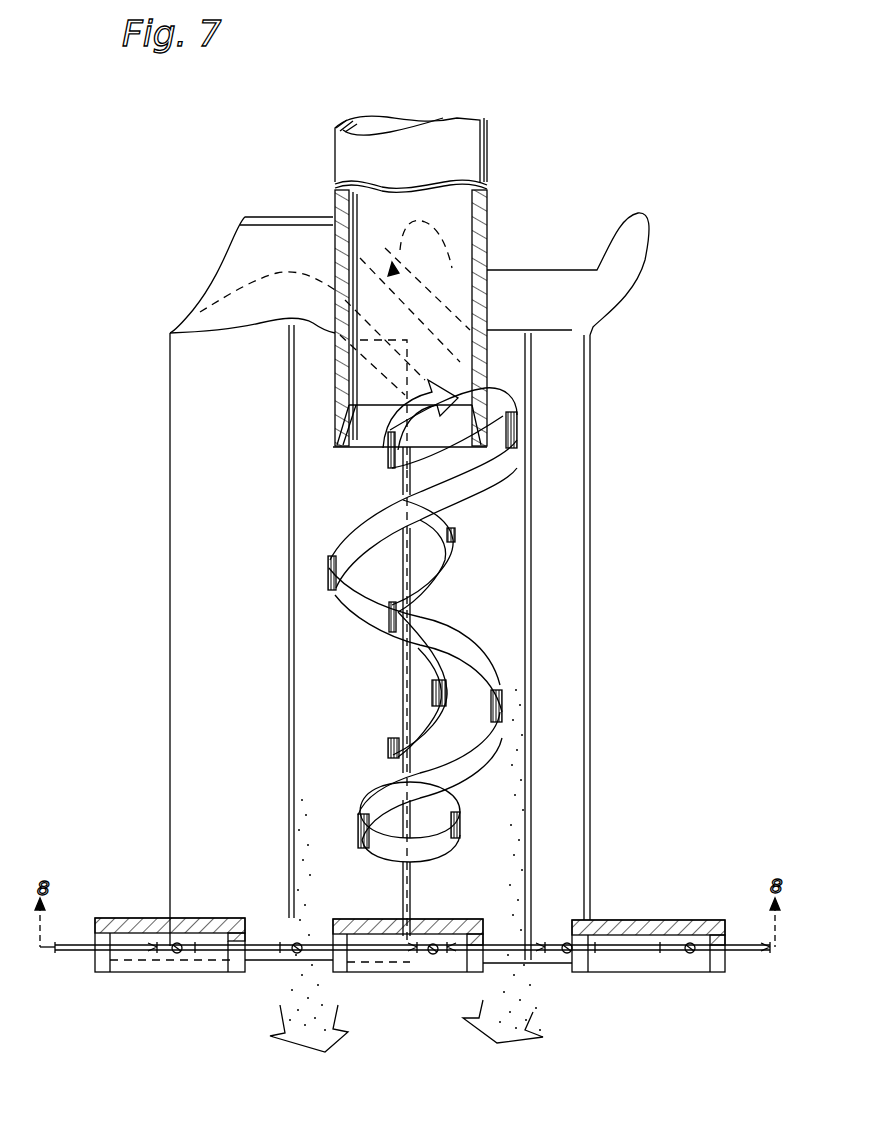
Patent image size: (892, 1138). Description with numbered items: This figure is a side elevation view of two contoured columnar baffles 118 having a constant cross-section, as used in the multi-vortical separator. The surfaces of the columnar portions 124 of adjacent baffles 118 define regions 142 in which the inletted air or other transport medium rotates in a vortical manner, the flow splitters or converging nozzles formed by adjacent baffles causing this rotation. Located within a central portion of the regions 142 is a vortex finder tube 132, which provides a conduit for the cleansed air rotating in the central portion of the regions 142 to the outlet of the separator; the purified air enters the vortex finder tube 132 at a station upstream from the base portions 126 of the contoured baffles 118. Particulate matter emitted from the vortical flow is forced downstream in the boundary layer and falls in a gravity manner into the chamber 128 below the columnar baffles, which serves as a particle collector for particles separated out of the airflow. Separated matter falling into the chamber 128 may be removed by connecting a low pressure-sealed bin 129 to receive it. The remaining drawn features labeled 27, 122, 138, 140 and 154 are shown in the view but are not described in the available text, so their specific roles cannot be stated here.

The screws 27 is at (740, 947).
The contoured columnar baffles 118 is at (187, 740).
The flange 122 is at (533, 272).
The columnar portions 124 is at (187, 790).
The base portions 126 is at (537, 965).
The chamber 128 is at (425, 1048).
The low pressure-sealed bin 129 is at (120, 890).
The vortex finder tubes 132 is at (487, 150).
The funnel 138 is at (210, 303).
The particle stream 140 is at (298, 800).
The regions 142 is at (455, 597).
The flow arrow 154 is at (458, 462).